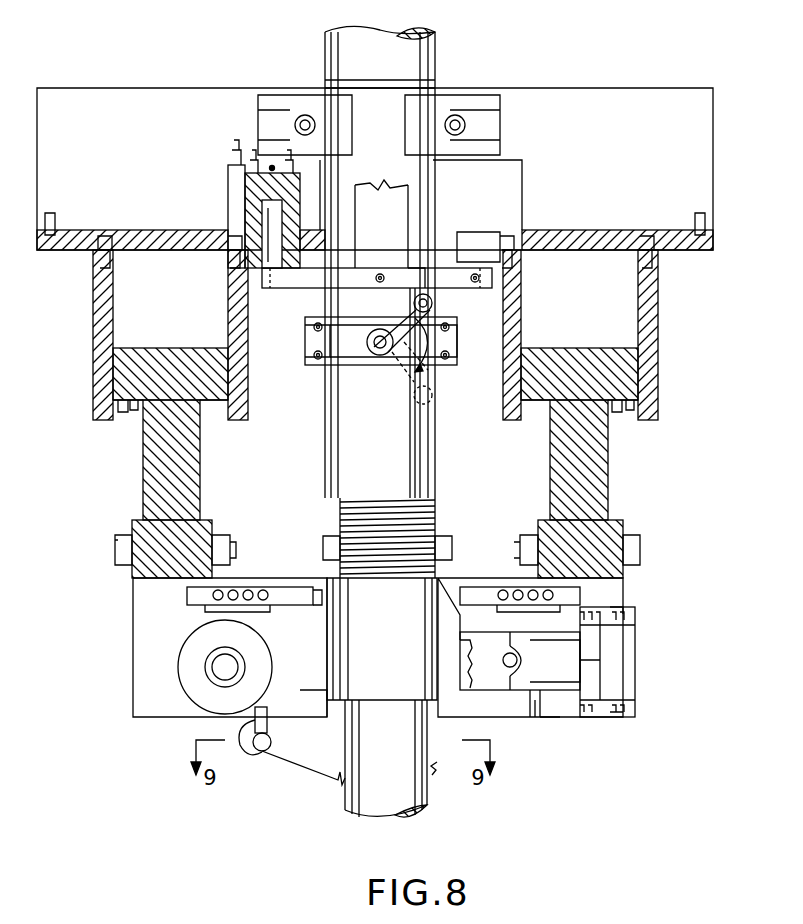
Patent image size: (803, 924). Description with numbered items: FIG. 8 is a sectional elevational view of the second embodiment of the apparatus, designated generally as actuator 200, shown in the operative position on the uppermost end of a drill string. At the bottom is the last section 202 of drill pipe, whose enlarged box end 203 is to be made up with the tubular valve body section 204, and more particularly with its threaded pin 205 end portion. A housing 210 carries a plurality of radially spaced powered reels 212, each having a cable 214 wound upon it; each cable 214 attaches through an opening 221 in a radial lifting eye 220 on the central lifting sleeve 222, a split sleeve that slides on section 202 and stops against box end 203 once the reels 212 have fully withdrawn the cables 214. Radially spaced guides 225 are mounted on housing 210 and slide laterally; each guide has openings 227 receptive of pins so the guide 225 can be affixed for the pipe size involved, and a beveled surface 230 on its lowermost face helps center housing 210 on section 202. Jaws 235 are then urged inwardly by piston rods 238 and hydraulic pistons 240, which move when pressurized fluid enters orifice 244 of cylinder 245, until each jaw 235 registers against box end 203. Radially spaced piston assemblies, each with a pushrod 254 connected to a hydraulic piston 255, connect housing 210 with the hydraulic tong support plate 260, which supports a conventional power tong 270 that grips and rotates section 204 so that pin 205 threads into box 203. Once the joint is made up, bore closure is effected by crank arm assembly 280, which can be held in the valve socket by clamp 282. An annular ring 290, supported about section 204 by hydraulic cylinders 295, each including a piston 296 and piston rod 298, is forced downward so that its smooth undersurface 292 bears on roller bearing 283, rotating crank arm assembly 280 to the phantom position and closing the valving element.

The actuator 200 is at (105, 498).
The last section of drill pipe 202 is at (366, 791).
The box end 203 is at (359, 656).
The tubular valve body section 204 is at (369, 461).
The pin end portion 205 is at (410, 512).
The housing 210 is at (132, 700).
The powered reels 212 is at (195, 693).
The cable 214 is at (265, 707).
The radial lifting eyes 220 is at (327, 756).
The openings 221 is at (259, 752).
The central lifting sleeve 222 is at (436, 772).
The guides 225 is at (311, 608).
The openings 227 is at (266, 588).
The beveled surface 230 is at (318, 608).
The jaws 235 is at (490, 682).
The piston rods 238 is at (534, 671).
The hydraulic pistons 240 is at (658, 398).
The orifice 244 is at (637, 663).
The cylinder 245 is at (575, 622).
The pushrod 254 is at (143, 470).
The hydraulic piston 255 is at (178, 347).
The hydraulic tong support plate 260 is at (583, 238).
The power tong assembly 270 is at (137, 88).
The crank arm assembly 280 is at (375, 332).
The clamp 282 is at (330, 358).
The roller bearing 283 is at (432, 305).
The annular ring 290 is at (415, 278).
The smooth undersurface 292 is at (300, 294).
The hydraulic cylinders 295 is at (459, 260).
The piston 296 is at (272, 185).
The piston rod 298 is at (280, 258).